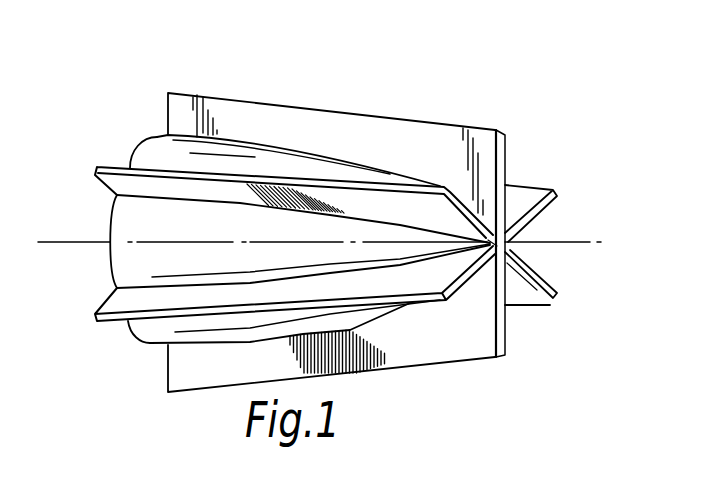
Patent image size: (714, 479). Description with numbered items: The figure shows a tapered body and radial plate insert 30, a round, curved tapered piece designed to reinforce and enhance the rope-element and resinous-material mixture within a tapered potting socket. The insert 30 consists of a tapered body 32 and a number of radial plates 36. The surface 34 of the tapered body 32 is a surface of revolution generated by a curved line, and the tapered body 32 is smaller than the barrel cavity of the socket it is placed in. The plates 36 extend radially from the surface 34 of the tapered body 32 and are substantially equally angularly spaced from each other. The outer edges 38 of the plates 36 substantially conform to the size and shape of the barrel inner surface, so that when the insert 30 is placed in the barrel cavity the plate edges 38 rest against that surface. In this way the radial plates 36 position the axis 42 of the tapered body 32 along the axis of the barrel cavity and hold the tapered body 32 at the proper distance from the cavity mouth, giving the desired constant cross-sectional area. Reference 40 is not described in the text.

The tapered body and radial plate insert 30 is at (538, 228).
The tapered body 32 is at (157, 137).
The surface 34 is at (157, 158).
The radial plates 36 is at (525, 185).
The outer edges 38 is at (442, 121).
The mounting plate 40 is at (342, 127).
The axis 42 is at (83, 242).